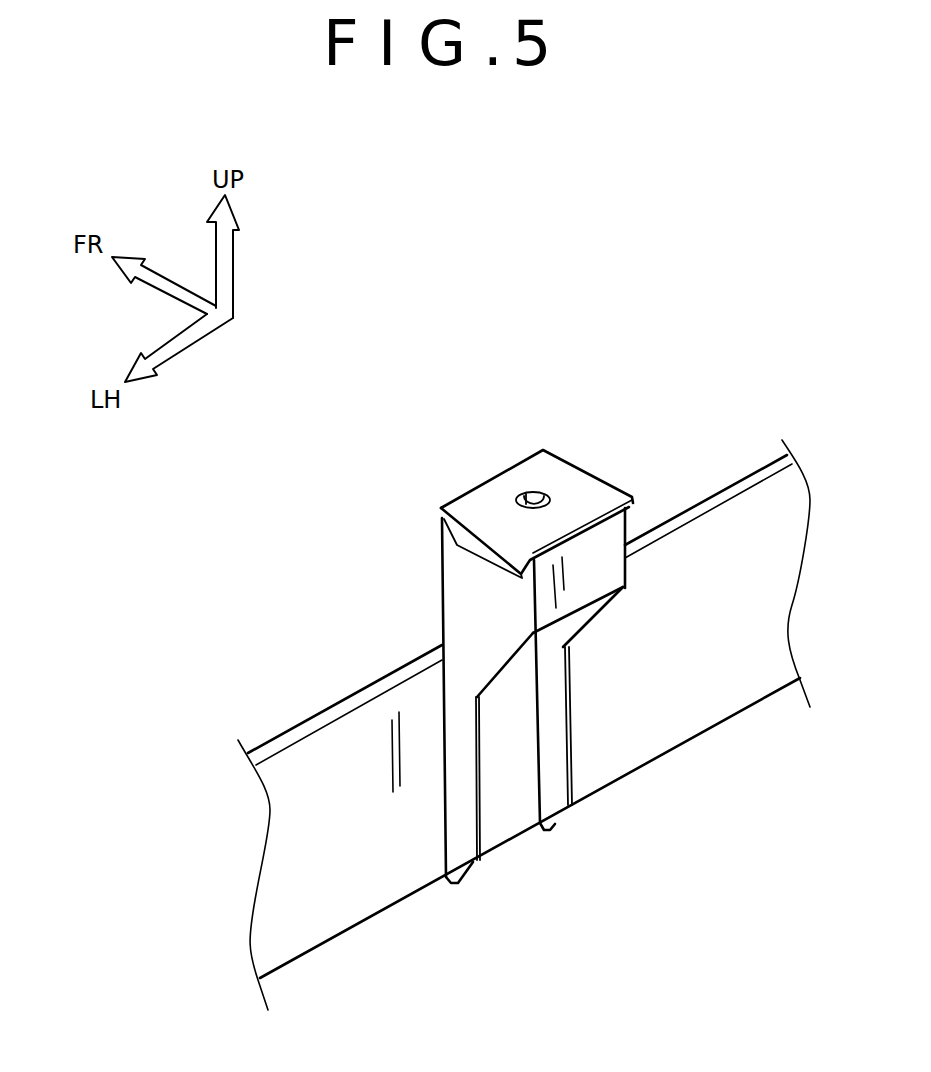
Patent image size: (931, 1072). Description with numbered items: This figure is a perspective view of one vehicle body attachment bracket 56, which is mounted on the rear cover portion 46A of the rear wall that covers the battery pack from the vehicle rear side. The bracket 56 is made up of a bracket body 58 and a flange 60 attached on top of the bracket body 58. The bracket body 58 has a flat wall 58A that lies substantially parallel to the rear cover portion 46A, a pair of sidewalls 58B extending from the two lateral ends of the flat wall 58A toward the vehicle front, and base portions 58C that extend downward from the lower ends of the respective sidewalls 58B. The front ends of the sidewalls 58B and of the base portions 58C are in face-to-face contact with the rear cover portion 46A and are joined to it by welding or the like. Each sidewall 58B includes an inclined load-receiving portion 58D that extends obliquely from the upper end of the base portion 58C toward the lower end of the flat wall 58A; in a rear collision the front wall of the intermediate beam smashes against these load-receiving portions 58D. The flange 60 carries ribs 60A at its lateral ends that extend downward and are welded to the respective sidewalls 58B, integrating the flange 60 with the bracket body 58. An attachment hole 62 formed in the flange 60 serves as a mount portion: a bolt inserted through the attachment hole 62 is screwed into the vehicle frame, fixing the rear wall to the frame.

The rear cover portion 46A is at (372, 890).
The vehicle body attachment bracket 56 is at (512, 645).
The bracket body 58 is at (514, 667).
The flat wall 58A is at (595, 578).
The sidewall 58B is at (441, 641).
The base portion 58C is at (480, 815).
The load-receiving portion 58D is at (503, 672).
The flange 60 is at (493, 469).
The rib 60A is at (480, 543).
The attachment hole 62 is at (528, 497).